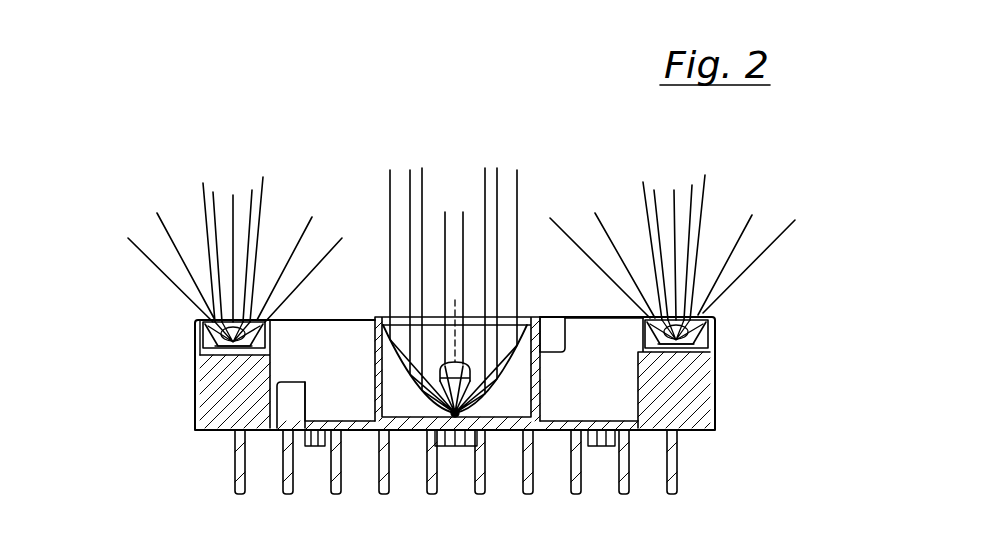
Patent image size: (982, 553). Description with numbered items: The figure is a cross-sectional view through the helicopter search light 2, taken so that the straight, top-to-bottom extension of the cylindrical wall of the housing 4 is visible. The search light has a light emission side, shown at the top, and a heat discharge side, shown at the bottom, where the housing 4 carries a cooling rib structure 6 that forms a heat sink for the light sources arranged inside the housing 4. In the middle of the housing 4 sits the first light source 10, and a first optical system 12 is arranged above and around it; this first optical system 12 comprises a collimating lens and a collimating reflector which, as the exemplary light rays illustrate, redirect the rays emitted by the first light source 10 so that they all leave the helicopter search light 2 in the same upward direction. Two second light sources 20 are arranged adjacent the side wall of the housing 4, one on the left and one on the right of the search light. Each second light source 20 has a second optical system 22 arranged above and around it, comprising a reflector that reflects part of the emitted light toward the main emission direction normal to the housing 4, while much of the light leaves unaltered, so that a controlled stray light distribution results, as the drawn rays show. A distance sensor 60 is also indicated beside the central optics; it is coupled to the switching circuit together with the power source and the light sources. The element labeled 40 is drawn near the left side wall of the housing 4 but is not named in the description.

The helicopter search light 2 is at (143, 328).
The housing 4 is at (717, 395).
The cooling rib structure 6 is at (682, 477).
The first light source 10 is at (437, 428).
The first optical system 12 is at (403, 365).
The second light source 20 is at (213, 373).
The second optical system 22 is at (268, 335).
The wall element 40 is at (281, 382).
The distance sensor 60 is at (548, 316).